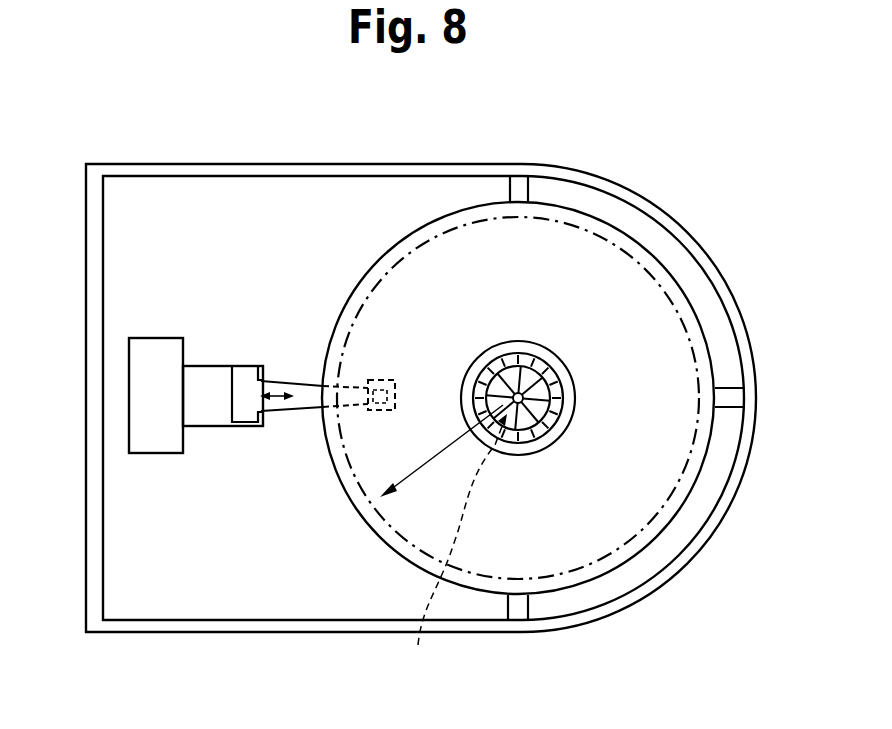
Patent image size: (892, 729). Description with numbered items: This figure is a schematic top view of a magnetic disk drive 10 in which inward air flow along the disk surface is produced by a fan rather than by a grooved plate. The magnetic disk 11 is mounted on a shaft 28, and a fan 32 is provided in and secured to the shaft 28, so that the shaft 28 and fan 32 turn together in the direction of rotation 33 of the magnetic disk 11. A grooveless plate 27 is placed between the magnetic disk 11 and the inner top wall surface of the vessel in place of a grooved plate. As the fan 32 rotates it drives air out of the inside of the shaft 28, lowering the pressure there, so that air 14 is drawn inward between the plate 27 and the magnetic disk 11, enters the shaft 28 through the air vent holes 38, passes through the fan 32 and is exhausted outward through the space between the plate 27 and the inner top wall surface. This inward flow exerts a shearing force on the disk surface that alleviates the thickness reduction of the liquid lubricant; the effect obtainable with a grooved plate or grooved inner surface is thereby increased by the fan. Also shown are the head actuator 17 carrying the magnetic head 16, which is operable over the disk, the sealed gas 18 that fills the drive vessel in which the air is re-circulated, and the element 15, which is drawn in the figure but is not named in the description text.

The magnetic disk drive 10 is at (222, 140).
The magnetic disk 11 is at (463, 220).
The air 14 is at (400, 483).
The housing 15 is at (91, 532).
The magnetic head 16 is at (248, 408).
The head actuator 17 is at (138, 402).
The sealed gas 18 is at (140, 198).
The grooveless plate 27 is at (622, 240).
The shaft 28 is at (546, 397).
The fan 32 is at (523, 428).
The direction of rotation 33 is at (434, 412).
The air vent holes 38 is at (552, 414).